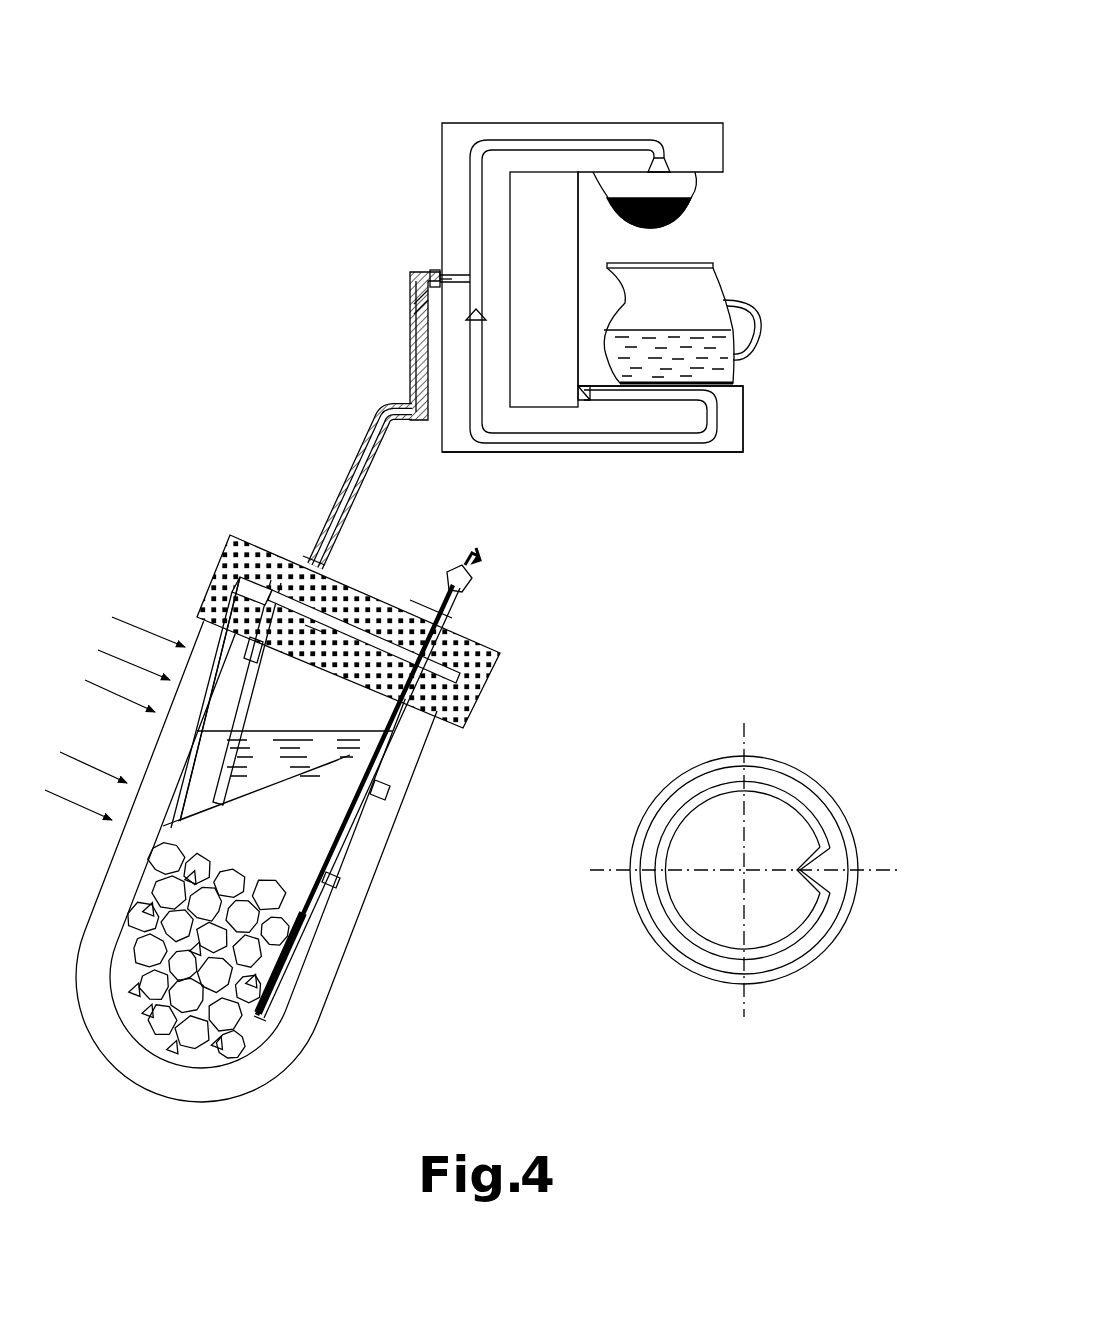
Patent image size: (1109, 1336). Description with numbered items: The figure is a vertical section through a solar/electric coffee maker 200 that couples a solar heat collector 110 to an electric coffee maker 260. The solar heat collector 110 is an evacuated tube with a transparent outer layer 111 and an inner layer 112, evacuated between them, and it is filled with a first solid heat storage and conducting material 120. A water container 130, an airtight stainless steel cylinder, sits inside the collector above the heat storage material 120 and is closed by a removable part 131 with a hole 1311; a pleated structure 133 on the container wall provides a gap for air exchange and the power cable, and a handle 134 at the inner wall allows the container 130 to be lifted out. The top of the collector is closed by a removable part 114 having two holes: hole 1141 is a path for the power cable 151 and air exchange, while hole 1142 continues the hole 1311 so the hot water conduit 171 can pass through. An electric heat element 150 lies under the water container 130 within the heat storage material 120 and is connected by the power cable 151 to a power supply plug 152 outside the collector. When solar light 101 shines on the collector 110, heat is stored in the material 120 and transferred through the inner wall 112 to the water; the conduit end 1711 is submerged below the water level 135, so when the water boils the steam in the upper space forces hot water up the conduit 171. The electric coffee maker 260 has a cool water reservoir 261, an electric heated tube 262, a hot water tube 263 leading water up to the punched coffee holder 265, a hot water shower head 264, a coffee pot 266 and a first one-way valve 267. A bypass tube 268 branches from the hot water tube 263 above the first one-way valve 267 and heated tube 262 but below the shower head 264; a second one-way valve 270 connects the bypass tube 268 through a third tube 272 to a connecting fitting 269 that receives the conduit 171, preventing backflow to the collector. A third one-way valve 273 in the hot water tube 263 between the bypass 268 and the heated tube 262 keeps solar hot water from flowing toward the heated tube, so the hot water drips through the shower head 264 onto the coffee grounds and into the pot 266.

The solar light 101 is at (142, 747).
The solar heat collector 110 is at (590, 700).
The transparent outer layer 111 is at (395, 830).
The inner layer 112 is at (374, 790).
The removable part 114 is at (504, 654).
The hole 1141 is at (443, 633).
The hole 1142 is at (345, 551).
The first solid heat storage and conducting material 120 is at (228, 1034).
The water container 130 is at (258, 652).
The removable part 131 is at (448, 586).
The hole 1311 is at (290, 635).
The pleated structure 133 is at (382, 779).
The handle 134 is at (227, 696).
The water level 135 is at (337, 678).
The electric heat element 150 is at (294, 973).
The power cable 151 is at (334, 880).
The power supply plug 152 is at (469, 580).
The hot water conduit 171 is at (350, 462).
The conduit end 1711 is at (216, 786).
The solar/electric coffee maker 200 is at (283, 312).
The electric coffee maker 260 is at (749, 125).
The cool water reservoir 261 is at (560, 272).
The electric heated tube 262 is at (726, 410).
The hot water tube 263 is at (472, 162).
The hot water shower head 264 is at (658, 158).
The punched coffee holder 265 is at (698, 198).
The coffee pot 266 is at (723, 298).
The first one-way valve 267 is at (411, 270).
The bypass tube 268 is at (466, 270).
The connecting fitting 269 is at (434, 270).
The second one-way valve 270 is at (452, 279).
The third tube 272 is at (437, 288).
The third one-way valve 273 is at (481, 317).